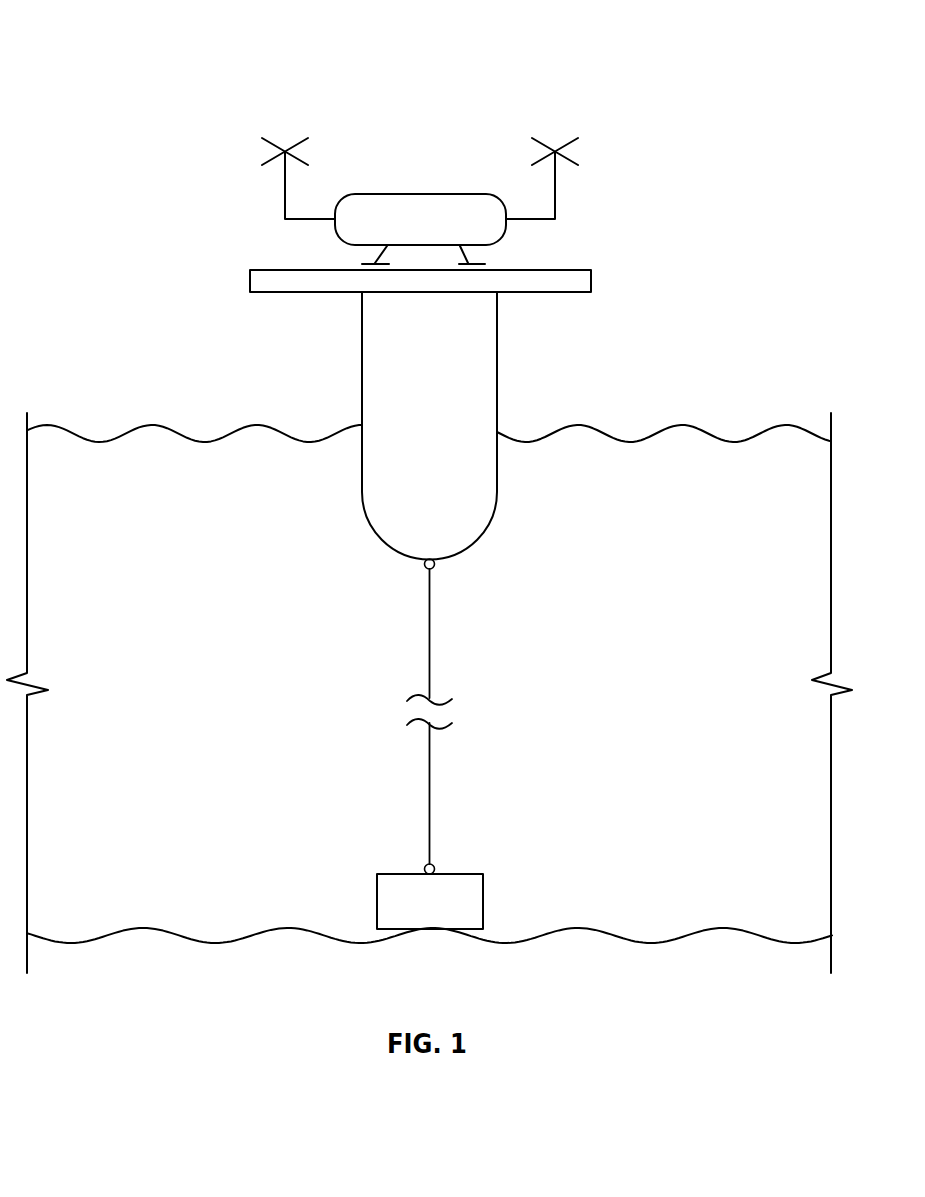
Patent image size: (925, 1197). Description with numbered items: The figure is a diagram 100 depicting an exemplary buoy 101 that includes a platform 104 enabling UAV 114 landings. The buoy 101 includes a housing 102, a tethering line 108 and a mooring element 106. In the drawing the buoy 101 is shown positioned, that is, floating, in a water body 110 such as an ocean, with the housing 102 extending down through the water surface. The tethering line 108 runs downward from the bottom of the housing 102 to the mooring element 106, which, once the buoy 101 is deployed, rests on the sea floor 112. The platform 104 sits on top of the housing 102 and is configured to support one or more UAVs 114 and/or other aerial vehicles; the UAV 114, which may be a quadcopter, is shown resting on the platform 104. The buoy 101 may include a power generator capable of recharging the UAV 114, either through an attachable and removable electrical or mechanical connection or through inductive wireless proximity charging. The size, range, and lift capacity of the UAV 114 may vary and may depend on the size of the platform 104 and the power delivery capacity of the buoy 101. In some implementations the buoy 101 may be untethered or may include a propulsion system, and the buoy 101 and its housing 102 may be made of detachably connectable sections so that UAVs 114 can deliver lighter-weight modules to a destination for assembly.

The diagram 100 is at (114, 69).
The buoy 101 is at (450, 344).
The housing 102 is at (497, 380).
The platform 104 is at (591, 277).
The mooring element 106 is at (483, 885).
The tethering line 108 is at (430, 640).
The water body 110 is at (802, 477).
The sea floor 112 is at (732, 928).
The UAV 114 is at (467, 193).